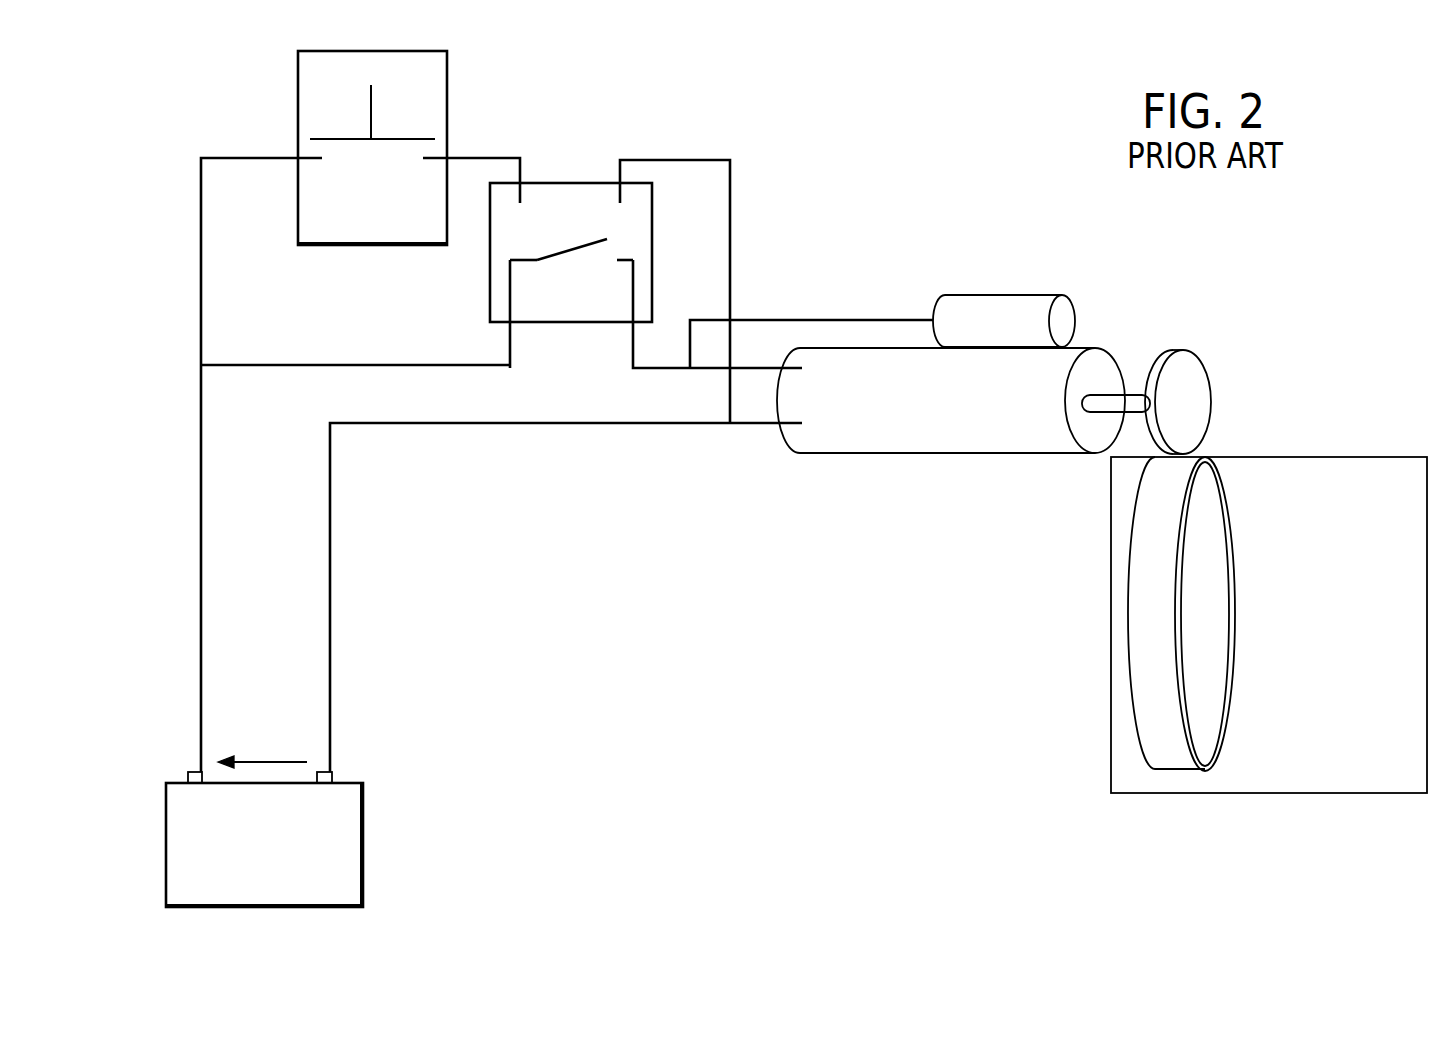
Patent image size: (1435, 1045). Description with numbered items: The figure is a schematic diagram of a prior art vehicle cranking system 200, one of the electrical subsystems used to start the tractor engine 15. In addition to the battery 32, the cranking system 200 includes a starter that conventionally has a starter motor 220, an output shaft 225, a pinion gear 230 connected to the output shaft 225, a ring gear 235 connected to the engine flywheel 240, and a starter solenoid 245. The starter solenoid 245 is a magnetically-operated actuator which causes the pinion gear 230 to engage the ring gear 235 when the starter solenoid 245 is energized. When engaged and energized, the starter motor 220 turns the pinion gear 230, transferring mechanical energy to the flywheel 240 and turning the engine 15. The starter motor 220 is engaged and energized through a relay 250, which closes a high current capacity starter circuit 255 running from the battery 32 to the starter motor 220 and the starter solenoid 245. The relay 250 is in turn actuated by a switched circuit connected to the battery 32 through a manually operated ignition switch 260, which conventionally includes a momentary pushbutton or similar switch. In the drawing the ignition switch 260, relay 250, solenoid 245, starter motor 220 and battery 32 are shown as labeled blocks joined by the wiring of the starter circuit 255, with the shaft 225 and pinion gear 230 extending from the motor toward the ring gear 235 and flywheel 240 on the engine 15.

The cranking system 200 is at (751, 652).
The ignition switch 260 is at (297, 128).
The relay 250 is at (652, 228).
The starter circuit 255 is at (367, 363).
The starter solenoid 245 is at (992, 302).
The starter motor 220 is at (868, 433).
The output shaft 225 is at (1133, 403).
The pinion gear 230 is at (1160, 363).
The tractor engine 15 is at (1337, 793).
The ring gear 235 is at (1155, 717).
The engine flywheel 240 is at (1203, 657).
The battery 32 is at (363, 815).